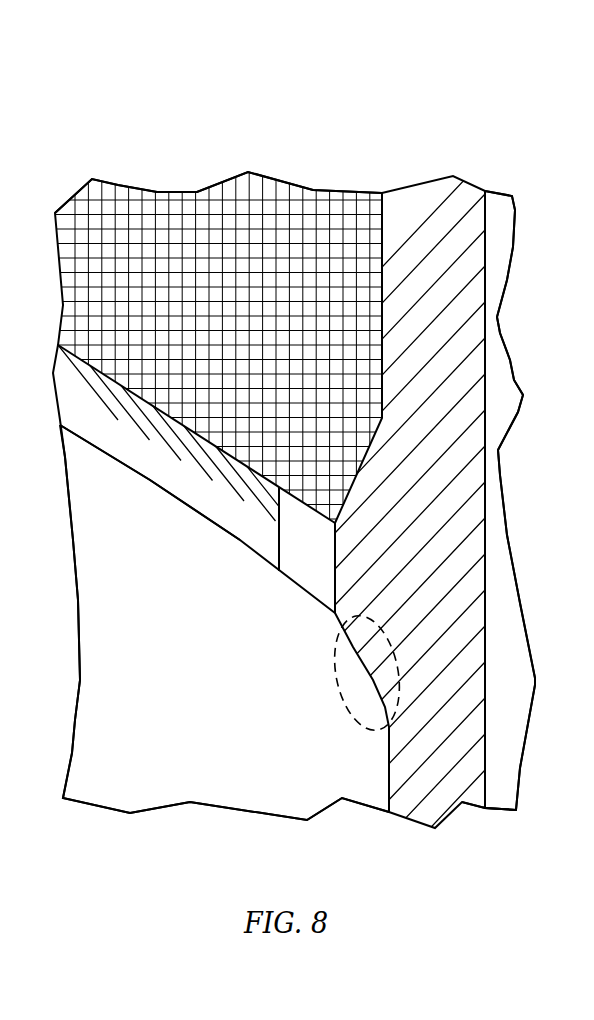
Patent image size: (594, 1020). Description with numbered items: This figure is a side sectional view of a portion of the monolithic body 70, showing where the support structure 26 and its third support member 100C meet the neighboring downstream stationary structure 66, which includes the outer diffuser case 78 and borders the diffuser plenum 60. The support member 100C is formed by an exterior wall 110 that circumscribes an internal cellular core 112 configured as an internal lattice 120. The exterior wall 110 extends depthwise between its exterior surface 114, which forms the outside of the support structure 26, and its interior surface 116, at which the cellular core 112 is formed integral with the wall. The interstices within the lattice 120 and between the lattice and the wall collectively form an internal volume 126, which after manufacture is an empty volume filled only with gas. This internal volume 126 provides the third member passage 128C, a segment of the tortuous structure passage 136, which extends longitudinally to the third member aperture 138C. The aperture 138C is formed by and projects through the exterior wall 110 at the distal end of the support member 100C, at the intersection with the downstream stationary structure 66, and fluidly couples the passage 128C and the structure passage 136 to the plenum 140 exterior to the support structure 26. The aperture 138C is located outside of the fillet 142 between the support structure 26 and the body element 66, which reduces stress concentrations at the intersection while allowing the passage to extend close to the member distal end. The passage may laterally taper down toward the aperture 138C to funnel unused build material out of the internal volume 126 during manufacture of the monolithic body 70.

The monolithic body 70 is at (438, 100).
The cellular core 112 is at (220, 301).
The internal lattice 120 is at (221, 174).
The third member passage 128C is at (218, 158).
The structure passage 136 is at (124, 178).
The internal volume 126 is at (334, 183).
The downstream stationary structure 66 is at (499, 222).
The outer diffuser case 78 is at (489, 287).
The exterior wall 110 is at (140, 465).
The interior surface 116 is at (105, 368).
The exterior surface 114 is at (84, 447).
The support structure 26 is at (150, 511).
The third support member 100C is at (174, 528).
The third member aperture 138C is at (305, 568).
The fillet 142 is at (354, 678).
The plenum 140 is at (188, 728).
The diffuser plenum 60 is at (499, 800).